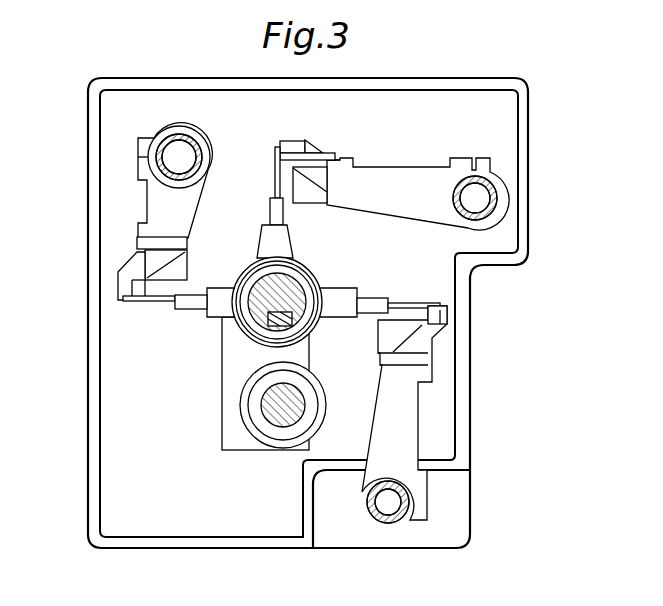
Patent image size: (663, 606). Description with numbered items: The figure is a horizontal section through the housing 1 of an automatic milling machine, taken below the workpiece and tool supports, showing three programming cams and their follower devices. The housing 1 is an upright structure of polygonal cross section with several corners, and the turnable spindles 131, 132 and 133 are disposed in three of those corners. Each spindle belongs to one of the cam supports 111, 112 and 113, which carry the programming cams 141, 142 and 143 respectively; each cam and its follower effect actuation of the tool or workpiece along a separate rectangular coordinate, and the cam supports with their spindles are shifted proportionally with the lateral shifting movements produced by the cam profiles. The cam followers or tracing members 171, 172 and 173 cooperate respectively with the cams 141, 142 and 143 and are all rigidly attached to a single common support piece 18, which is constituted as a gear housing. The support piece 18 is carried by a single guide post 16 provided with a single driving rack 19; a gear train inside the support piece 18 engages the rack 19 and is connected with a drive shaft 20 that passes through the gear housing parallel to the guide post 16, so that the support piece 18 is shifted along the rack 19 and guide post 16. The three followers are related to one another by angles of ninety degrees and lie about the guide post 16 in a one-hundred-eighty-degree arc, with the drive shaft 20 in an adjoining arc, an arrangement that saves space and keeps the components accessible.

The housing 1 is at (528, 209).
The guide post 16 is at (281, 292).
The common support piece 18 is at (237, 353).
The driving rack 19 is at (303, 302).
The drive shaft 20 is at (277, 418).
The cam support 111 is at (398, 410).
The cam support 112 is at (384, 175).
The cam support 113 is at (163, 200).
The turning spindle 131 is at (394, 521).
The turning spindle 132 is at (494, 188).
The turning spindle 133 is at (177, 135).
The programming cam 141 is at (438, 310).
The programming cam 142 is at (290, 142).
The programming cam 143 is at (120, 291).
The cam follower 171 is at (411, 300).
The cam follower 172 is at (275, 175).
The cam follower 173 is at (153, 303).